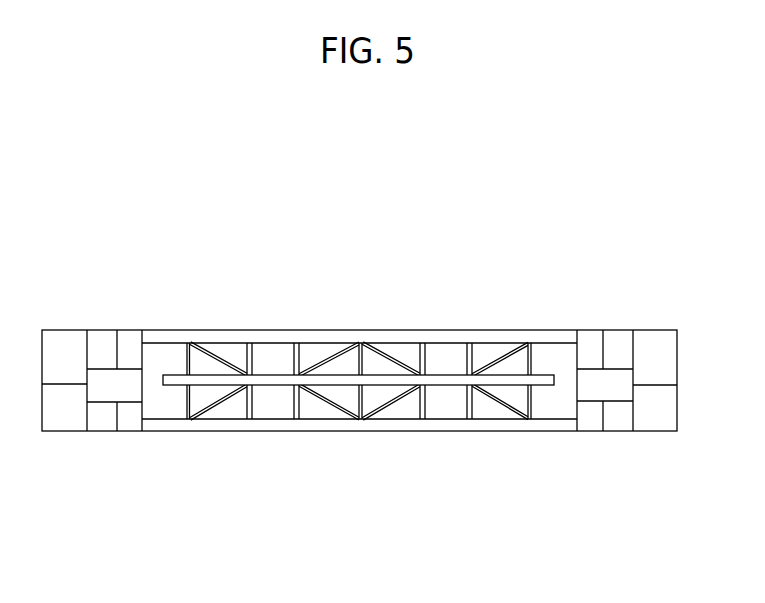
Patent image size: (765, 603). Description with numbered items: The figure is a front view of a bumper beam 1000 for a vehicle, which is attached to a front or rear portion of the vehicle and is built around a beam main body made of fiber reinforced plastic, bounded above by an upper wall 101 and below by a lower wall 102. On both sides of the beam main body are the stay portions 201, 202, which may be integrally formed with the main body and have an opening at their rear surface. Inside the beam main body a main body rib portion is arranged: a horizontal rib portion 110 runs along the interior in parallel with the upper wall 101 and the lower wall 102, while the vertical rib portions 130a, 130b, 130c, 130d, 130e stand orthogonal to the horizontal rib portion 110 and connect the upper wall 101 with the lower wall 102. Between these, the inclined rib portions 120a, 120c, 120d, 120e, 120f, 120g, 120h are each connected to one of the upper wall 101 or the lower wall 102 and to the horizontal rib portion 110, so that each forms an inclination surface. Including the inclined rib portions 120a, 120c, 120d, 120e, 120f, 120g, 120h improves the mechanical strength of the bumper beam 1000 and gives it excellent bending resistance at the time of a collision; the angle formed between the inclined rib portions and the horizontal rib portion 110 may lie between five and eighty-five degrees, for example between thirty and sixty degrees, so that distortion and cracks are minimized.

The bumper beam for a vehicle 1000 is at (157, 244).
The horizontal rib portion 110 is at (170, 376).
The inclined rib portion 120a is at (225, 352).
The inclined rib portion 120c is at (320, 355).
The inclined rib portion 120d is at (328, 403).
The inclined rib portion 120e is at (387, 353).
The inclined rib portion 120f is at (398, 398).
The inclined rib portion 120g is at (500, 353).
The inclined rib portion 120h is at (505, 408).
The vertical rib portion 130a is at (250, 421).
The vertical rib portion 130b is at (297, 421).
The vertical rib portion 130c is at (362, 421).
The vertical rib portion 130d is at (426, 421).
The vertical rib portion 130e is at (473, 421).
The upper wall of beam main body 101 is at (552, 340).
The lower wall of beam main body 102 is at (562, 431).
The stay portion 201 is at (658, 422).
The stay portion 202 is at (98, 431).